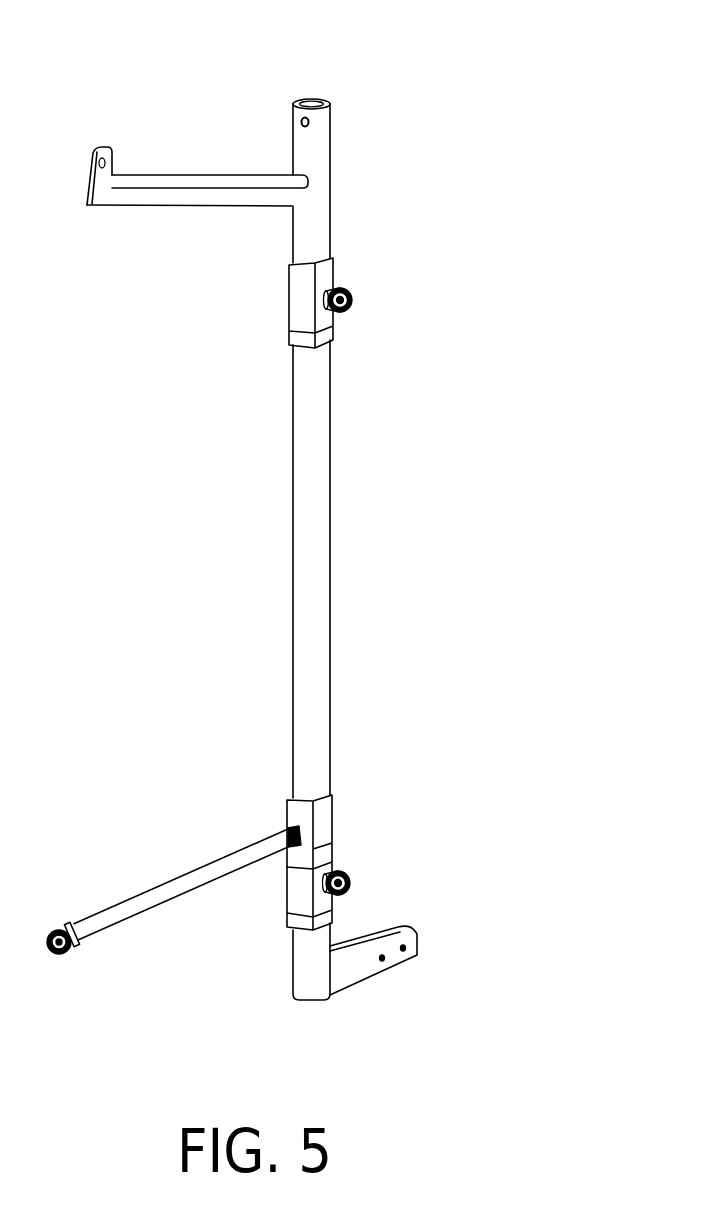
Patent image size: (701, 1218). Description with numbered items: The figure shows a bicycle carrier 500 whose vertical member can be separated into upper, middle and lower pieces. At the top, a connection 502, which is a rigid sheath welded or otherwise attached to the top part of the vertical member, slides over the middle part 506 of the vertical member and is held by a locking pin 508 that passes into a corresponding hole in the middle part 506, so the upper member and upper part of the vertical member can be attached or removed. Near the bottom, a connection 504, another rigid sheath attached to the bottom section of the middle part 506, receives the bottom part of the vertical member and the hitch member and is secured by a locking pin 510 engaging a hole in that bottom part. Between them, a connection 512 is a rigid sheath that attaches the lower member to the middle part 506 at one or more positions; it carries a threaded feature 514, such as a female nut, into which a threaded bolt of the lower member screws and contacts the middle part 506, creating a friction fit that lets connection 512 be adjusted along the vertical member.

The bicycle carrier 500 is at (187, 49).
The connection 502 is at (333, 262).
The connection 504 is at (332, 918).
The middle part of the vertical member 506 is at (313, 535).
The locking pin 508 is at (352, 303).
The locking pin 510 is at (347, 872).
The connection 512 is at (332, 798).
The threaded feature 514 is at (288, 827).